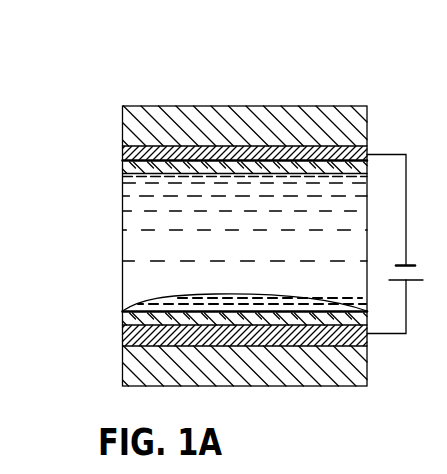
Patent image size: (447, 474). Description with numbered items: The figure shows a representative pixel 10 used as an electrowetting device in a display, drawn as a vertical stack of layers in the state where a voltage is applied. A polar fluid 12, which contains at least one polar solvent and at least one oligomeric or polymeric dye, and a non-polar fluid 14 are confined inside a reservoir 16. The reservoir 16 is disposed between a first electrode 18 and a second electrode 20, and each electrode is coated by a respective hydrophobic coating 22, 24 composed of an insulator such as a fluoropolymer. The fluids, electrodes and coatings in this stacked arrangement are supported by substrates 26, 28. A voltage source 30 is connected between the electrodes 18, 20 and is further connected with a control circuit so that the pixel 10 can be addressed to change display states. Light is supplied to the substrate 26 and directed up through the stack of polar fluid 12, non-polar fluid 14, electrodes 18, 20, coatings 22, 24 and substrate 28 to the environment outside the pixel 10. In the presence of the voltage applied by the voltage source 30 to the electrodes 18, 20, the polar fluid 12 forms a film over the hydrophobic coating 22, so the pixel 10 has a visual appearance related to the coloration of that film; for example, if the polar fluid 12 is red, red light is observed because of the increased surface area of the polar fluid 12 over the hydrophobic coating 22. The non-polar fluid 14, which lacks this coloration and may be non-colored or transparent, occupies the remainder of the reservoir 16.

The pixel 10 is at (138, 64).
The polar fluid 12 is at (158, 297).
The non-polar fluid 14 is at (122, 247).
The reservoir 16 is at (362, 219).
The first electrode 18 is at (122, 334).
The second electrode 20 is at (122, 152).
The hydrophobic coating 22 is at (122, 319).
The hydrophobic coating 24 is at (122, 164).
The substrate 26 is at (122, 361).
The substrate 28 is at (122, 124).
The voltage source 30 is at (410, 262).